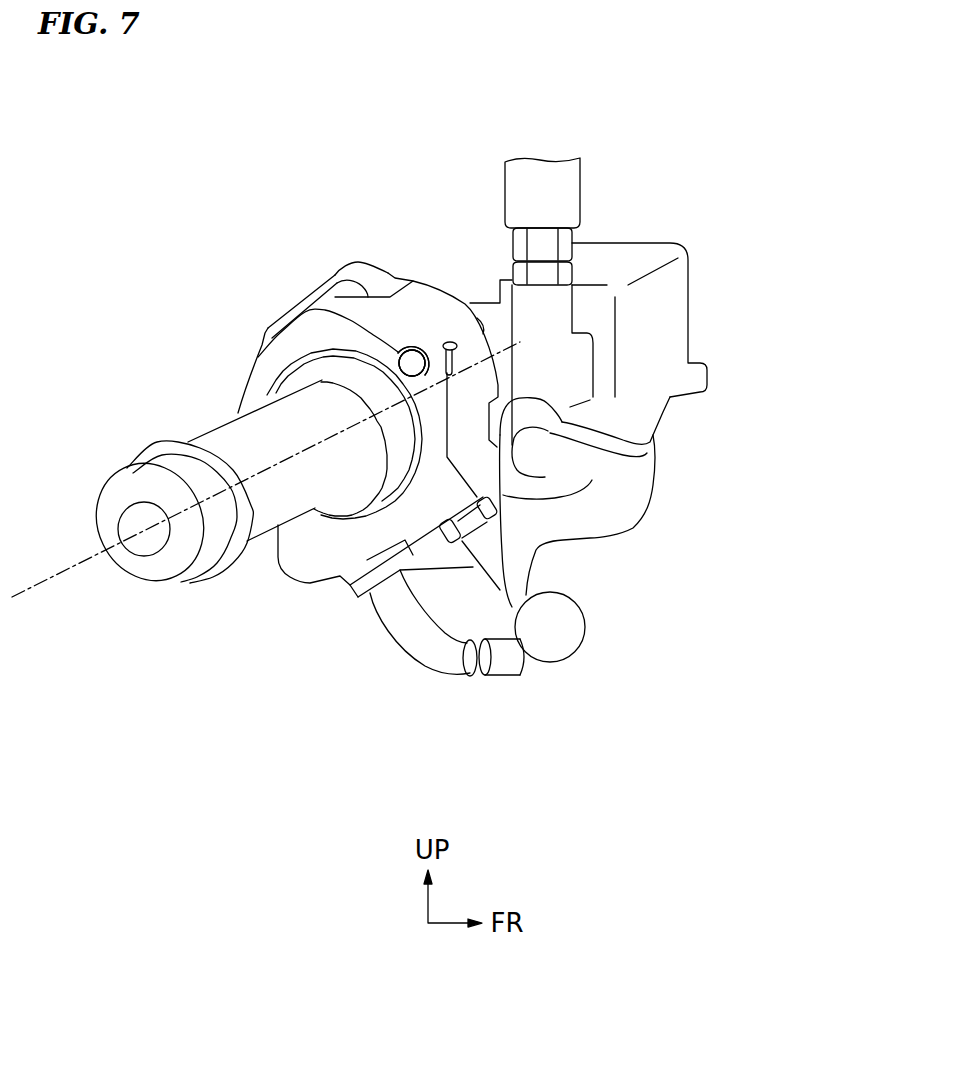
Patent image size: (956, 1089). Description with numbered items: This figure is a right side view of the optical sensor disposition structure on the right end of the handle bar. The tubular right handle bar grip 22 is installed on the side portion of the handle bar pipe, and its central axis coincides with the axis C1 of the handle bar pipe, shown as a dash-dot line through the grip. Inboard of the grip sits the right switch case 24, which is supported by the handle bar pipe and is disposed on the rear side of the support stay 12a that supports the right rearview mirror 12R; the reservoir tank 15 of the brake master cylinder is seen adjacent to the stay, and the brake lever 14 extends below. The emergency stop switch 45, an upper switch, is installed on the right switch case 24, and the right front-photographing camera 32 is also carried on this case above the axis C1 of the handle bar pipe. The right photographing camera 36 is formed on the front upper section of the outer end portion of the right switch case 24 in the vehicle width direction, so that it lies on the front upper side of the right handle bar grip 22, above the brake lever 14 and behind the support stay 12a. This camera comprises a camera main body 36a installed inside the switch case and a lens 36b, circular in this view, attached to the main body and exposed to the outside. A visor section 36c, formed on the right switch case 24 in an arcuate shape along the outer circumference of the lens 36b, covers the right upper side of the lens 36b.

The axis of the handle bar pipe C1 is at (60, 567).
The right handle bar grip 22 is at (222, 437).
The right switch case 24 is at (297, 563).
The emergency stop switch 45 is at (282, 320).
The right photographing camera 36 is at (392, 162).
The camera main body 36a is at (397, 365).
The lens 36b is at (391, 350).
The visor section 36c is at (410, 347).
The right front-photographing camera 32 is at (482, 320).
The right rearview mirror 12R is at (572, 192).
The support stay 12a is at (562, 308).
The reservoir tank of a brake master cylinder 15 is at (677, 273).
The brake lever 14 is at (598, 523).